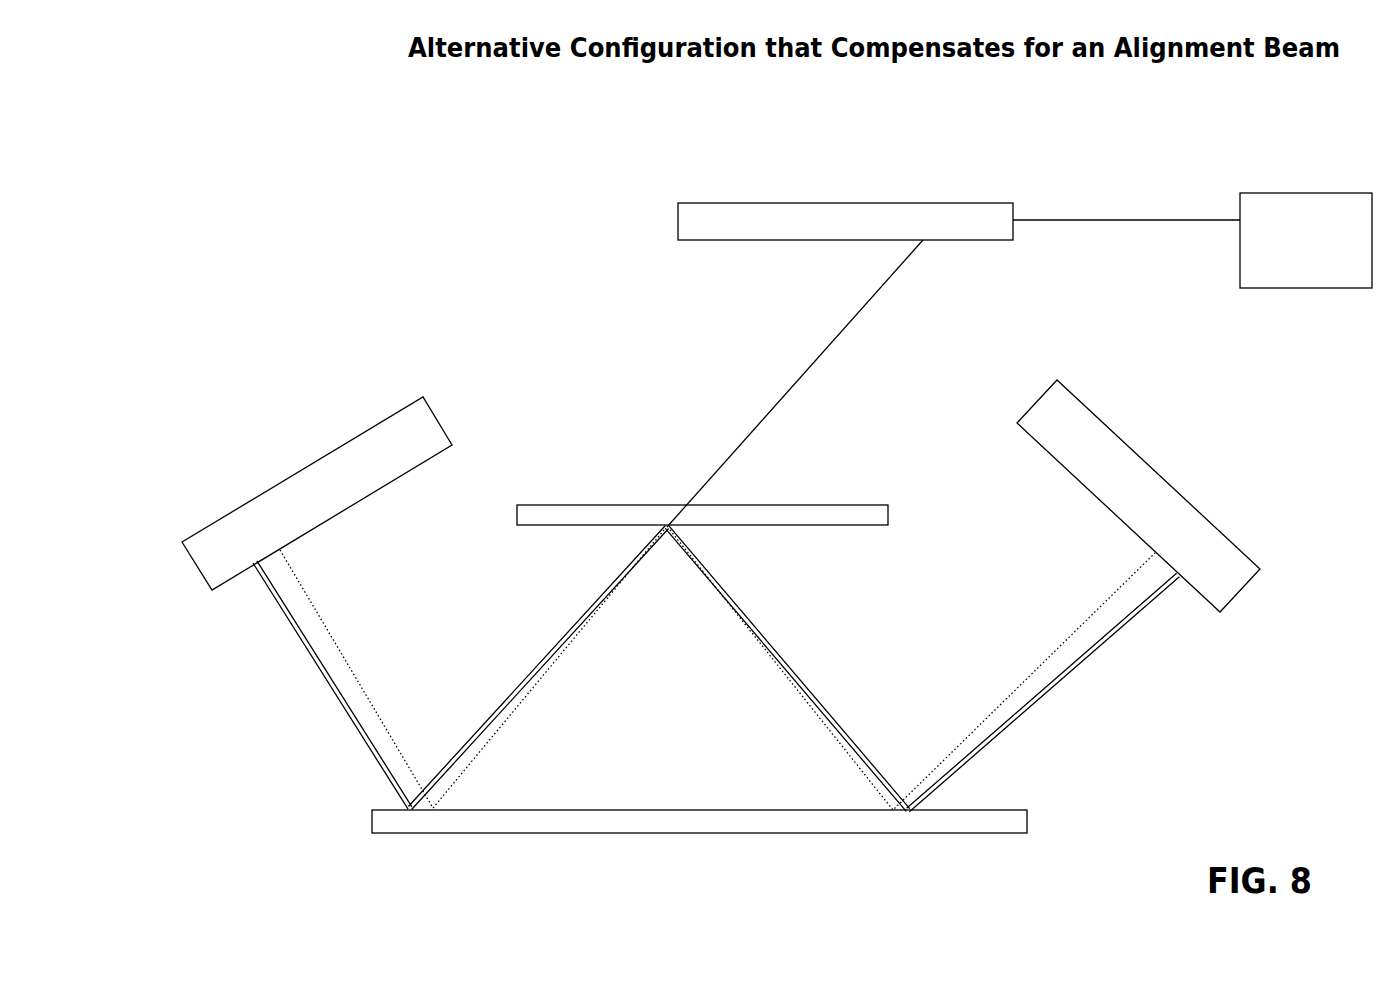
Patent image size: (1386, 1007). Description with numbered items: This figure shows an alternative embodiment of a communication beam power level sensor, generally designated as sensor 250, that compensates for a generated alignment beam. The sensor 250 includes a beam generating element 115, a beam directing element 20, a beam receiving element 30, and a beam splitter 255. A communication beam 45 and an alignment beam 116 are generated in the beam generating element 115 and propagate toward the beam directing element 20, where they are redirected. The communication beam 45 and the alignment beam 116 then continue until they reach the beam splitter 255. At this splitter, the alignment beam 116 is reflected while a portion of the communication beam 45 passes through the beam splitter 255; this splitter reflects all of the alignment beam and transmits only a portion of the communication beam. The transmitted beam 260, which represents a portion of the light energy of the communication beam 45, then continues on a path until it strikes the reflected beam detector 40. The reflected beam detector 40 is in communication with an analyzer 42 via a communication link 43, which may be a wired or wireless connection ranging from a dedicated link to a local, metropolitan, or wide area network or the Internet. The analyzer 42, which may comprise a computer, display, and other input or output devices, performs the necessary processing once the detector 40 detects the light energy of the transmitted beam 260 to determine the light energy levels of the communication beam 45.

The sensor 250 is at (390, 262).
The reflected beam detector 40 is at (678, 220).
The analyzer 42 is at (1283, 193).
The communication link 43 is at (1218, 216).
The transmitted beam 260 is at (830, 335).
The beam splitter 255 is at (882, 505).
The beam generating element 115 is at (450, 433).
The beam receiving element 30 is at (1242, 558).
The communication beam 45 is at (293, 638).
The alignment beam 116 is at (310, 597).
The beam directing element 20 is at (587, 833).